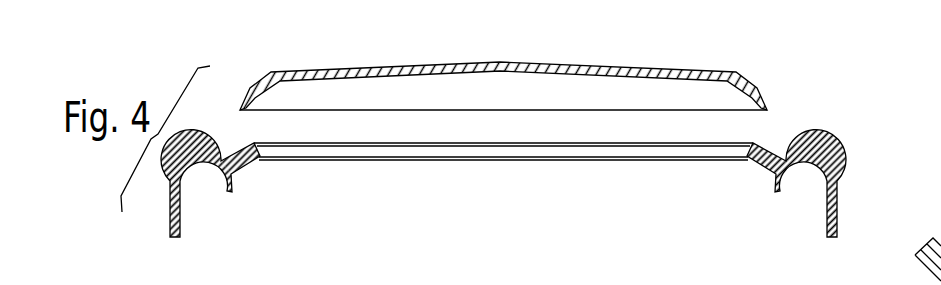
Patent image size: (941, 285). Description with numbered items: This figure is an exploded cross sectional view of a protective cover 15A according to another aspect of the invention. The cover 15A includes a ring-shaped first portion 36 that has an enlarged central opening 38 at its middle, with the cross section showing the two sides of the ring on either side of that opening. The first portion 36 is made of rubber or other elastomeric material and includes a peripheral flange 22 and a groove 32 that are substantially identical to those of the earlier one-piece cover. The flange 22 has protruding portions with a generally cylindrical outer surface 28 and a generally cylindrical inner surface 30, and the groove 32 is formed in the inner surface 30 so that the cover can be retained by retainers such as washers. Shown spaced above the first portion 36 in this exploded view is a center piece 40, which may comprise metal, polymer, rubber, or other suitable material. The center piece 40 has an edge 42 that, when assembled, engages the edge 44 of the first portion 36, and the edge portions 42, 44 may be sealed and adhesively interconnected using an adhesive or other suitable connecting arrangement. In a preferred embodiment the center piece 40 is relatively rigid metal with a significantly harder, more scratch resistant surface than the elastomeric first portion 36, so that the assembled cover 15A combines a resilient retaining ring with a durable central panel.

The protective cover 15A is at (797, 103).
The peripheral flange 22 is at (541, 195).
The outer surface 28 is at (840, 202).
The inner surface 30 is at (537, 227).
The groove 32 is at (537, 175).
The ring-shaped first portion 36 is at (830, 151).
The enlarged central opening 38 is at (503, 171).
The center piece 40 is at (530, 57).
The edge 42 is at (764, 101).
The edge 44 is at (730, 157).